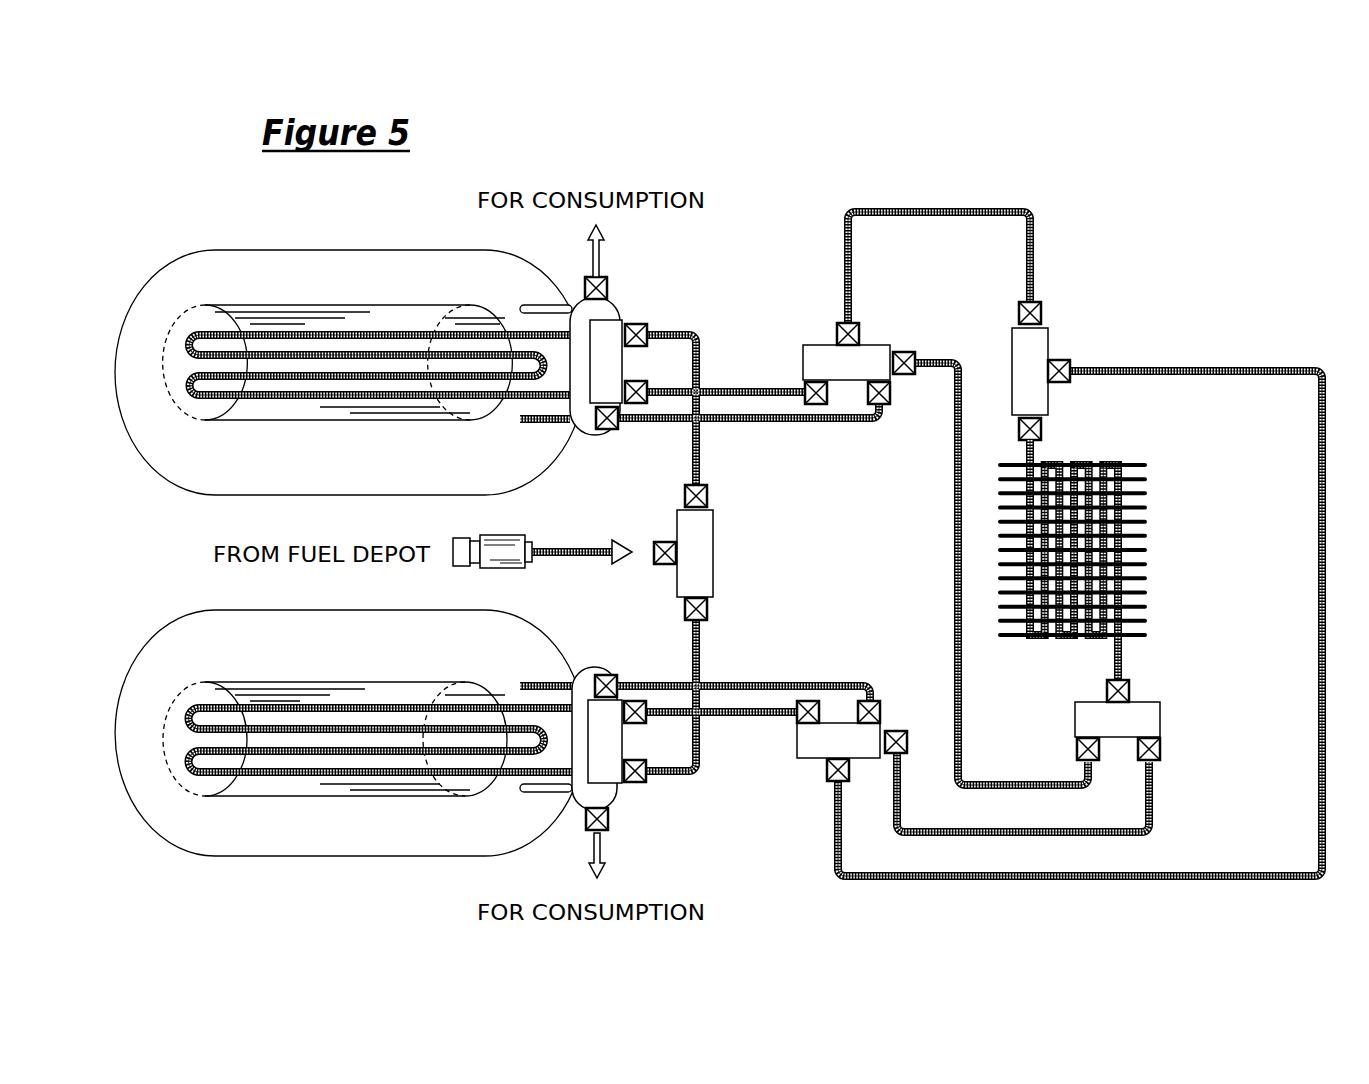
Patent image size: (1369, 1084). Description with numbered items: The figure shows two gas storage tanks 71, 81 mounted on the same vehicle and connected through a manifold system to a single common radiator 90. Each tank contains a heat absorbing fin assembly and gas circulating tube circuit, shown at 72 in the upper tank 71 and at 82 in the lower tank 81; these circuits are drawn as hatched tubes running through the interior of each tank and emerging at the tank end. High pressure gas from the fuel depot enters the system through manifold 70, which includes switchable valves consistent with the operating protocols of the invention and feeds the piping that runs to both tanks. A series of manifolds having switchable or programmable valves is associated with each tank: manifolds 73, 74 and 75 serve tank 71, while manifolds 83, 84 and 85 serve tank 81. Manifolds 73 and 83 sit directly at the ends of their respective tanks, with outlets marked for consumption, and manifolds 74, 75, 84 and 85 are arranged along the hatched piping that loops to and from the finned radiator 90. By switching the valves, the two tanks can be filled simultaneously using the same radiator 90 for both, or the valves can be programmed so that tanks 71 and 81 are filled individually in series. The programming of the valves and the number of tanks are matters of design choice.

The manifold 70 is at (715, 553).
The tank 71 is at (207, 490).
The heat absorbing fin assembly and gas circulating tube circuit 72 is at (333, 421).
The manifold 73 is at (618, 317).
The manifold 74 is at (883, 343).
The manifold 75 is at (1050, 337).
The tank 81 is at (222, 843).
The heat absorbing fin assembly and gas circulating tube circuit 82 is at (413, 680).
The manifold 83 is at (618, 792).
The manifold 84 is at (800, 762).
The manifold 85 is at (1162, 707).
The radiator 90 is at (1148, 540).